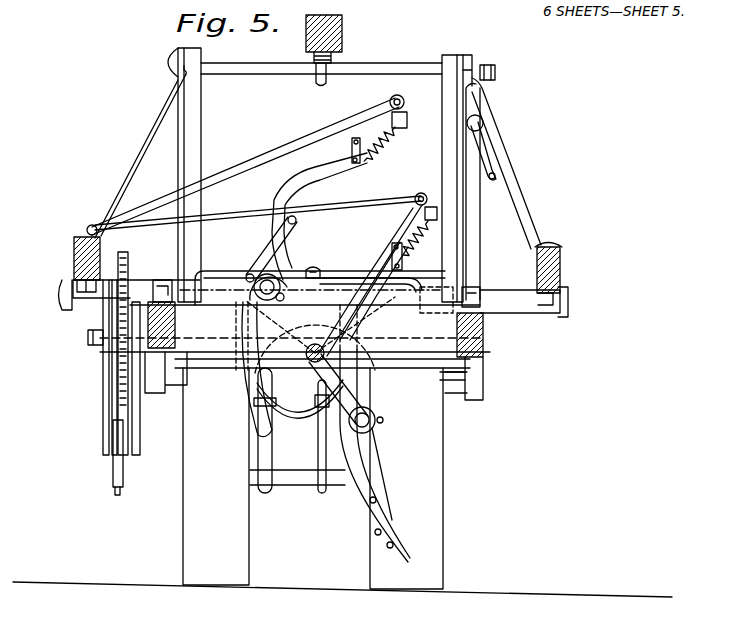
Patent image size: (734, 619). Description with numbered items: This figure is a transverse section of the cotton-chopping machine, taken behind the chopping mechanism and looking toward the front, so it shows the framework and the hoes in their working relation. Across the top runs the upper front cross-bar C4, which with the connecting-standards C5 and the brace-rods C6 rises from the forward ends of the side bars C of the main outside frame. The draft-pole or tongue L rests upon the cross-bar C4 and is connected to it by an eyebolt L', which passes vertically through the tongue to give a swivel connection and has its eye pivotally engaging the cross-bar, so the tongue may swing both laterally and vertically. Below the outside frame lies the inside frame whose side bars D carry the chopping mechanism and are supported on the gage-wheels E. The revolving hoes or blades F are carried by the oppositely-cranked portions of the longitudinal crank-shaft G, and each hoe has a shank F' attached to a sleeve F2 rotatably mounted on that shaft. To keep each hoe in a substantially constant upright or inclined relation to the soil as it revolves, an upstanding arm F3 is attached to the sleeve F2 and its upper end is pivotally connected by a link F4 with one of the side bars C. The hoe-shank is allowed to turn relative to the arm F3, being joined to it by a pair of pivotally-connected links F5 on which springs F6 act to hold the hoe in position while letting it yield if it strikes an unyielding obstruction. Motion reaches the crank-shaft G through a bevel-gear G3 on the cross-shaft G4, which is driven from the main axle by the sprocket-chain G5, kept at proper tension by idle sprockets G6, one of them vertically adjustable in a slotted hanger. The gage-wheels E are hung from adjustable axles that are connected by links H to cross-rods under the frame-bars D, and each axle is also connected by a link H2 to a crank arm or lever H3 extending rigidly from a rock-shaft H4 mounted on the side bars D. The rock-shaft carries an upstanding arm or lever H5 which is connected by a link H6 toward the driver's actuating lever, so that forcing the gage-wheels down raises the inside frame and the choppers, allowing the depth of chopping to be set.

The tongue L is at (334, 50).
The eyebolt L' is at (275, 101).
The cross-bar C4 is at (321, 56).
The connecting-standards C5 is at (201, 97).
The brace-rods C6 is at (547, 173).
The side bars C is at (74, 254).
The side bars D is at (175, 372).
The gage-wheels E is at (183, 512).
The sprocket-chain G5 is at (112, 408).
The idle sprockets G6 is at (125, 465).
The link F4 is at (248, 165).
The upstanding arm F3 is at (280, 186).
The springs F6 is at (378, 152).
The pivotally-connected links F5 is at (298, 216).
The crank-shaft G is at (248, 282).
The sleeve F2 is at (293, 275).
The cross-rod or rock-shaft H4 is at (386, 280).
The upstanding arms or levers H5 is at (480, 237).
The link H6 is at (490, 165).
The links H is at (265, 452).
The revolving hoes or blades F is at (304, 433).
The shank F' is at (243, 345).
The bevel-gear G3 is at (303, 412).
The link H2 is at (320, 452).
The crank arm or lever H3 is at (300, 399).
The cross-shaft G4 is at (460, 400).